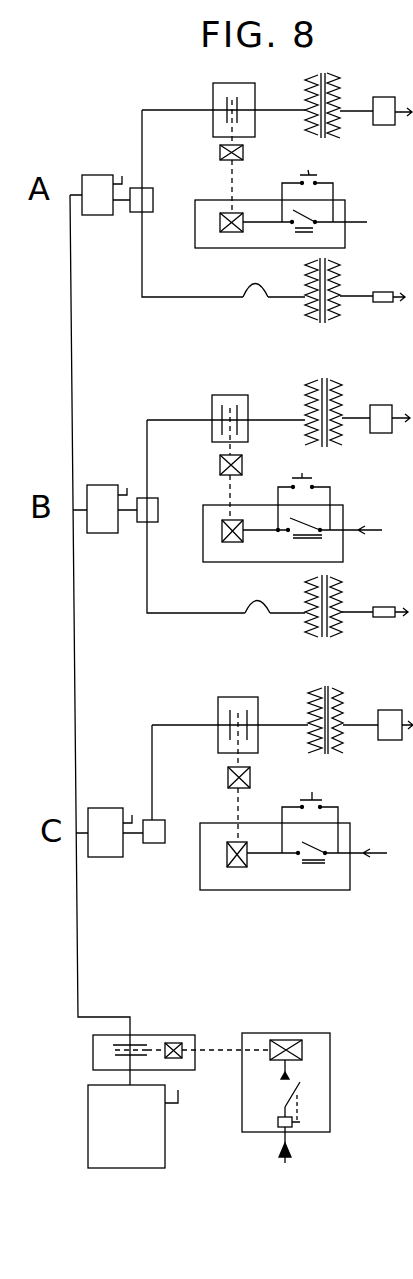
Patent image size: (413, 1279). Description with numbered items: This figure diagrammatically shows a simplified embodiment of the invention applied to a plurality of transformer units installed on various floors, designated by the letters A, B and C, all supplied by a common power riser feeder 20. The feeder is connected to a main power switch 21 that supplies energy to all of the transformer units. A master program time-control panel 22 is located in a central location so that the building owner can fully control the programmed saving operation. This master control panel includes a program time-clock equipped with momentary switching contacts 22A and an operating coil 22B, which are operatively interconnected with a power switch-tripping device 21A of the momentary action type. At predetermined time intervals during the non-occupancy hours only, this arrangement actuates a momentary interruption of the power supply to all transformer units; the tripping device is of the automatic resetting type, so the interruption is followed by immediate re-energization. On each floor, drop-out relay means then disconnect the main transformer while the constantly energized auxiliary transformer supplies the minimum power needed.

The common power riser feeder 20 is at (78, 963).
The main power switch 21 is at (88, 1142).
The power switch-tripping device 21A is at (168, 1043).
The master program time-control panel 22 is at (322, 1078).
The momentary switching contacts 22A is at (278, 1122).
The operating coil 22B is at (307, 1025).